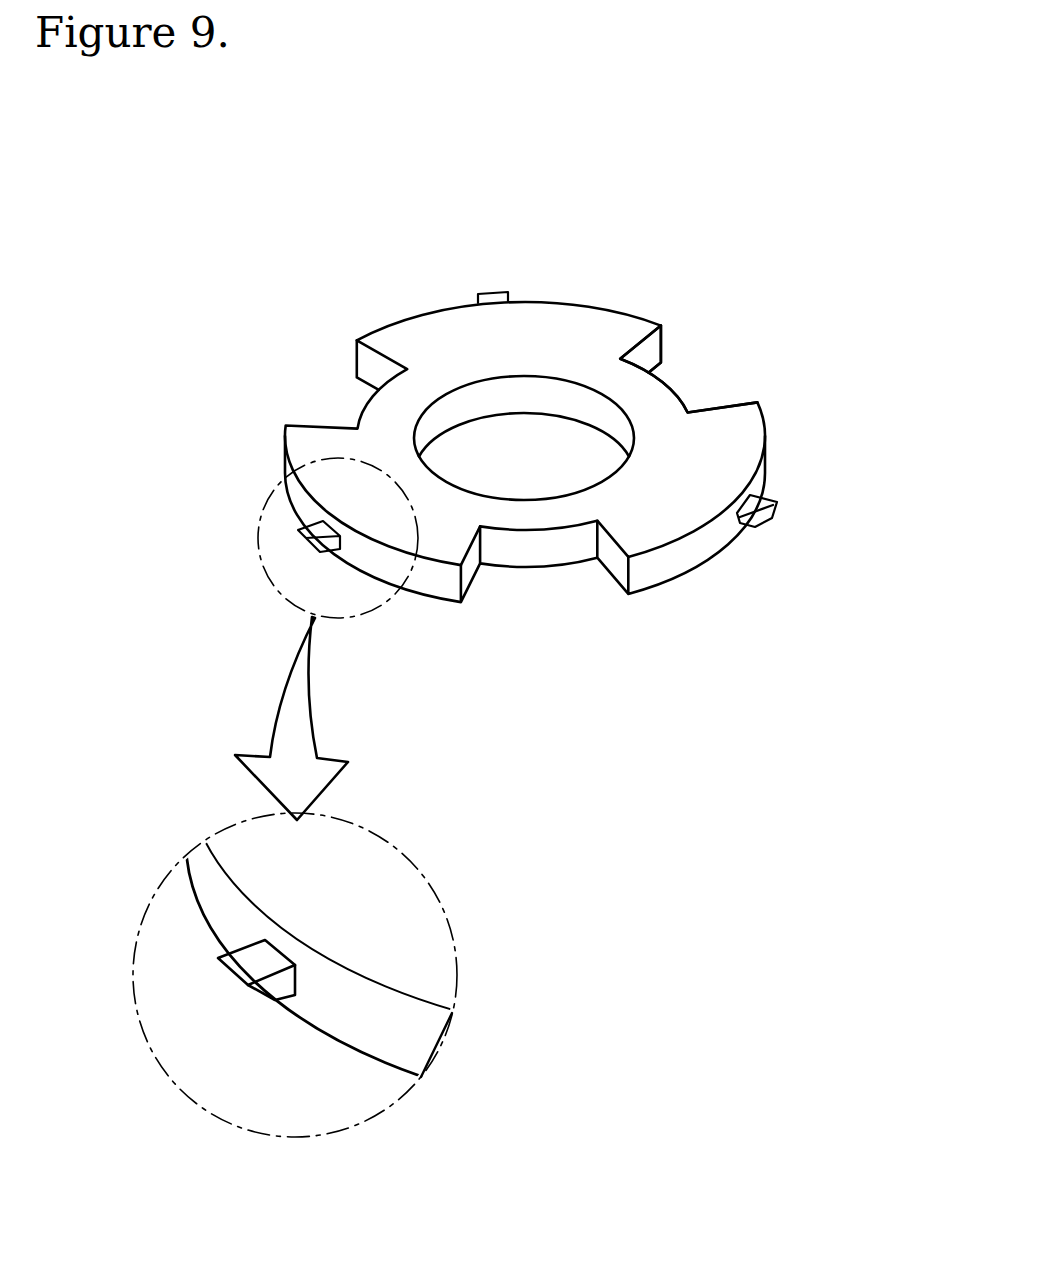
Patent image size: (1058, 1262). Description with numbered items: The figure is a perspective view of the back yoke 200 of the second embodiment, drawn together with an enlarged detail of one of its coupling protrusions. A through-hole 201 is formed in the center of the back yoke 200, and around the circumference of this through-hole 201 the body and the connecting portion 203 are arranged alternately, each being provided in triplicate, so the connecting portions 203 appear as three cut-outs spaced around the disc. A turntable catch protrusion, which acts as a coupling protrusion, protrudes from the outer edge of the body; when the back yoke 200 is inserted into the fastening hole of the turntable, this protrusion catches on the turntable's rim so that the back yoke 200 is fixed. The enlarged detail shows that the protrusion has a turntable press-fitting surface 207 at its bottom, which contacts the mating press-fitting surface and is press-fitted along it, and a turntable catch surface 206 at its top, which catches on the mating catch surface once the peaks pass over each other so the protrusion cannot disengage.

The back yoke 200 is at (708, 253).
The through-hole 201 is at (517, 432).
The connecting portion 203 is at (662, 398).
The turntable catch surface 206 is at (245, 965).
The turntable press-fitting surface 207 is at (236, 984).